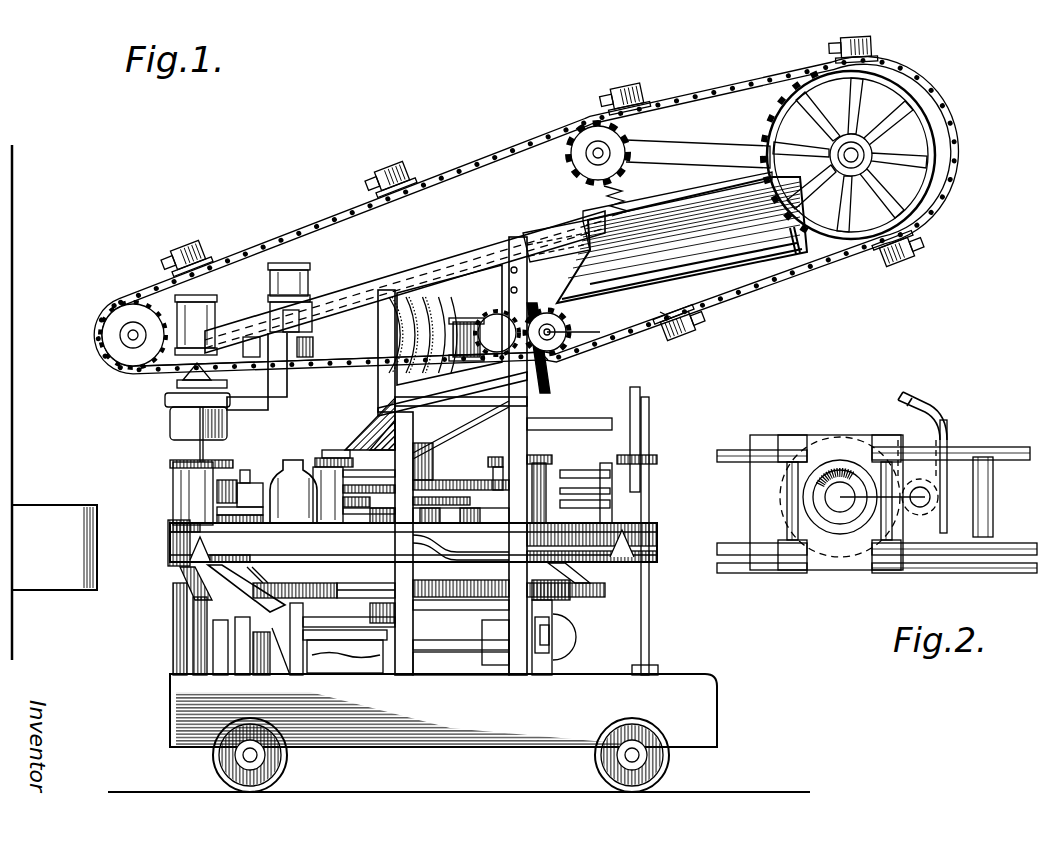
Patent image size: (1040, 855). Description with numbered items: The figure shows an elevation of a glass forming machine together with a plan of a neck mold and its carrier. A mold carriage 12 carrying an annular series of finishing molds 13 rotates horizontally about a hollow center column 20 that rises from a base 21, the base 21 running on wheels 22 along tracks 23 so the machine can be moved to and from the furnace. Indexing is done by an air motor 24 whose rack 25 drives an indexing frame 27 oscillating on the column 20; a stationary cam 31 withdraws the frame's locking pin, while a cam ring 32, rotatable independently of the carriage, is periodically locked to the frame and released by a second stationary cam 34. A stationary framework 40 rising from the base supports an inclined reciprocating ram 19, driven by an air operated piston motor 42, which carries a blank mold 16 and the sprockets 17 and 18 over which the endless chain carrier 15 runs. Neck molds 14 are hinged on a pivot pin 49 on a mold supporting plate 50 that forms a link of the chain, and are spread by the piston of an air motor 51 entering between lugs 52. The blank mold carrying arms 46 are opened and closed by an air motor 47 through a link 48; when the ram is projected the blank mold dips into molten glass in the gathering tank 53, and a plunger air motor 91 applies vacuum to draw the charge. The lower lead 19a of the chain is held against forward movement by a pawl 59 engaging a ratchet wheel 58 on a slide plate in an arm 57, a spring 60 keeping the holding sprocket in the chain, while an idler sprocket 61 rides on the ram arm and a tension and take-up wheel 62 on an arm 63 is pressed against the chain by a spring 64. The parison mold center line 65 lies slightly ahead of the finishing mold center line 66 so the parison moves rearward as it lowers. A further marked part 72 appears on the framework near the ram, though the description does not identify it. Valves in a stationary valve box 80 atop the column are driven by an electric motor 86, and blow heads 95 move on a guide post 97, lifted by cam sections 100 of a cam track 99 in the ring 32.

In FIG. 1, the mold carriage 12 is at (180, 520).
In FIG. 1, the finishing molds 13 is at (185, 500).
In FIG. 1, the neck molds 14 is at (186, 252).
In FIG. 2, the neck molds 14 is at (856, 520).
In FIG. 1, the endless chain carrier 15 is at (504, 151).
In FIG. 2, the endless chain carrier 15 is at (992, 446).
In FIG. 1, the blank mold 16 is at (178, 426).
In FIG. 1, the sprocket 17 is at (902, 106).
In FIG. 1, the sprocket 18 is at (124, 345).
In FIG. 1, the reciprocating ram 19 is at (695, 190).
In FIG. 1, the lower rail 19a is at (345, 354).
In FIG. 1, the hollow center column 20 is at (422, 470).
In FIG. 1, the base 21 is at (695, 680).
In FIG. 1, the wheels 22 is at (288, 764).
In FIG. 1, the tracks 23 is at (470, 790).
In FIG. 1, the air motor 24 is at (565, 630).
In FIG. 1, the rack 25 is at (550, 640).
In FIG. 1, the indexing frame 27 is at (492, 645).
In FIG. 1, the stationary cam 31 is at (272, 673).
In FIG. 1, the cam ring 32 is at (170, 545).
In FIG. 1, the stationary cam 34 is at (178, 612).
In FIG. 1, the stationary framework 40 is at (466, 262).
In FIG. 1, the air operated piston motor 42 is at (682, 240).
In FIG. 1, the blank mold carrying arms 46 is at (284, 404).
In FIG. 1, the air motor 47 is at (308, 280).
In FIG. 1, the link 48 is at (312, 328).
In FIG. 2, the pivot pin 49 is at (930, 500).
In FIG. 2, the mold supporting plate 50 is at (757, 520).
In FIG. 1, the air motor 51 is at (466, 320).
In FIG. 1, the lugs 52 is at (660, 314).
In FIG. 2, the lugs 52 is at (918, 402).
In FIG. 1, the gathering tank 53 is at (55, 510).
In FIG. 1, the arm 57 is at (540, 375).
In FIG. 1, the ratchet wheel 58 is at (570, 330).
In FIG. 1, the pawl 59 is at (551, 311).
In FIG. 1, the spring 60 is at (548, 358).
In FIG. 1, the idler sprocket 61 is at (495, 312).
In FIG. 1, the tension and take-up wheel 62 is at (575, 160).
In FIG. 1, the arm 63 is at (706, 146).
In FIG. 1, the spring 64 is at (622, 204).
In FIG. 1, the center line 65 is at (190, 453).
In FIG. 1, the center line 66 is at (214, 453).
In FIG. 1, the lever 72 is at (494, 420).
In FIG. 1, the stationary valve box 80 is at (352, 452).
In FIG. 1, the electric motor 86 is at (326, 458).
In FIG. 1, the air motor 91 is at (212, 322).
In FIG. 1, the blow heads 95 is at (630, 418).
In FIG. 1, the guide post 97 is at (648, 614).
In FIG. 1, the cam track 99 is at (657, 549).
In FIG. 1, the cam sections 100 is at (430, 545).